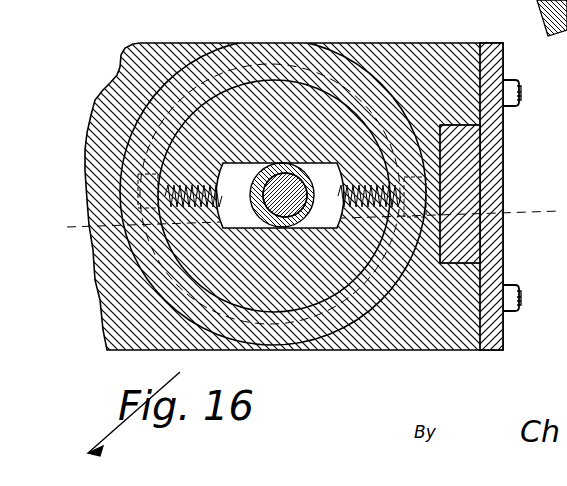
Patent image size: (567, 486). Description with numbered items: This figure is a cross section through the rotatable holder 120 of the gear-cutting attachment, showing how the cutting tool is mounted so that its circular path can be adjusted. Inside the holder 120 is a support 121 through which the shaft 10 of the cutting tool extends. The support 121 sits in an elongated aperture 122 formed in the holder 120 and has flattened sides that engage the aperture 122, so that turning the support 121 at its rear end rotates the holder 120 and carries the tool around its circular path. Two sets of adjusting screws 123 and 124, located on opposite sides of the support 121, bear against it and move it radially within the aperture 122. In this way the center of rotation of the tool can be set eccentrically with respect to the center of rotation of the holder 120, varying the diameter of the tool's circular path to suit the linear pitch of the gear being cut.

The shaft 10 is at (345, 82).
The holder 120 is at (287, 167).
The support 121 is at (253, 160).
The aperture 122 is at (215, 165).
The adjusting screws 123 is at (289, 202).
The adjusting screws 124 is at (425, 212).